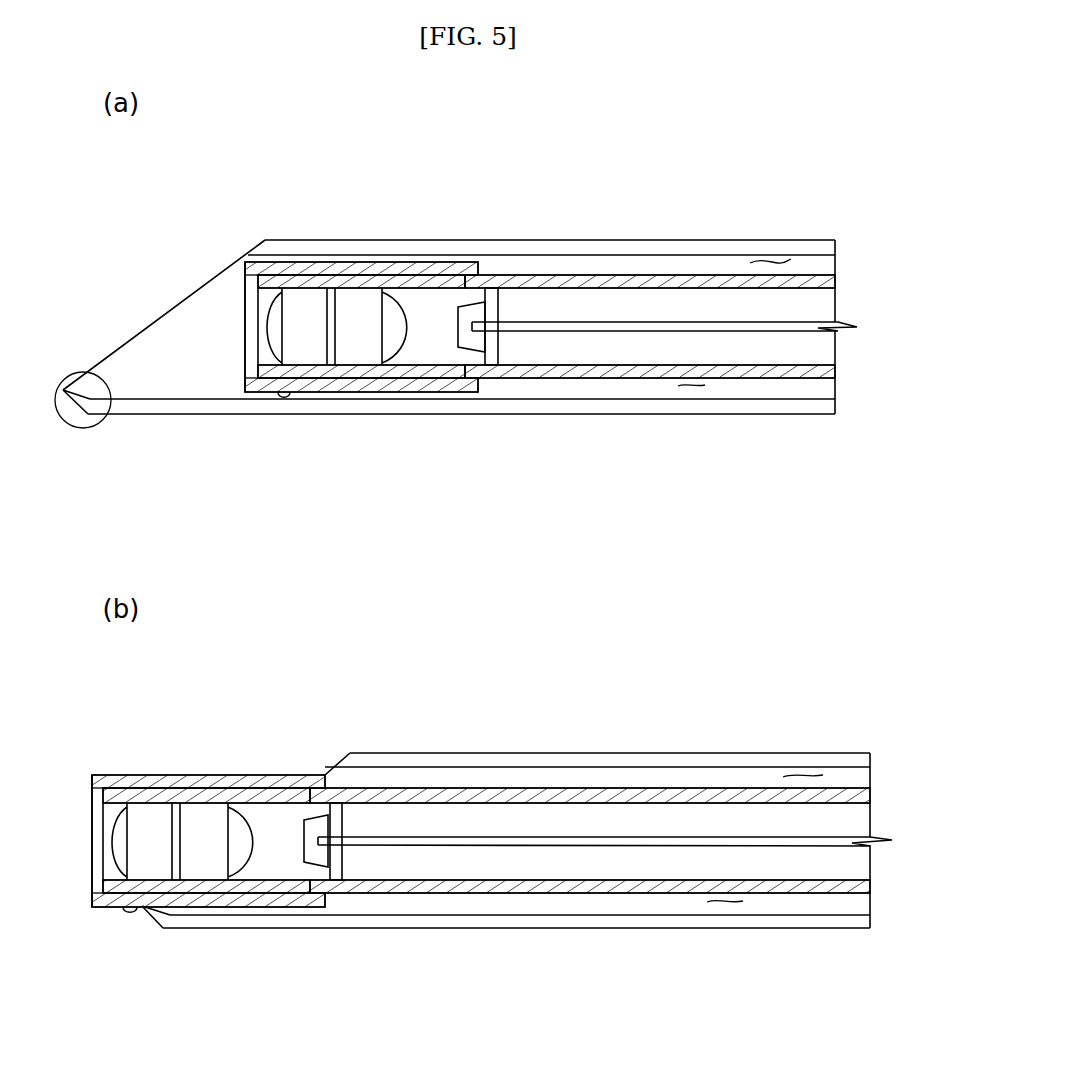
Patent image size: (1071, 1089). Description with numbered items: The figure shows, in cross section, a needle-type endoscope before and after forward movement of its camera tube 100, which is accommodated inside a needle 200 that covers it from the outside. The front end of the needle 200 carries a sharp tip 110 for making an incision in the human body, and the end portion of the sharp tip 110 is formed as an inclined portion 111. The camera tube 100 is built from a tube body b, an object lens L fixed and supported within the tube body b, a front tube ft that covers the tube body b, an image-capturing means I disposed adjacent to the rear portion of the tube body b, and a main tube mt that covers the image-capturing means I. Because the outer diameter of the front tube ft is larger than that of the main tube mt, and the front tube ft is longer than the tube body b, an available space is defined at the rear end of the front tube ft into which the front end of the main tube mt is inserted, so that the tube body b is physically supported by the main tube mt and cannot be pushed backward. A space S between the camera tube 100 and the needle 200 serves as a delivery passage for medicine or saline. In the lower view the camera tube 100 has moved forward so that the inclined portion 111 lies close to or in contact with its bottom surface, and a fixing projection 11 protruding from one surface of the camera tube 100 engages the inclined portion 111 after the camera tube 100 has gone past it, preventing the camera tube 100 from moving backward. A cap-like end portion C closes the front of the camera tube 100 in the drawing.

The camera tube 100 is at (607, 382).
The sharp tip 110 is at (167, 312).
The inclined portion 111 is at (84, 428).
The fixing projection 11 is at (283, 398).
The needle 200 is at (668, 250).
The front tube ft is at (333, 267).
The main tube mt is at (517, 282).
The object lens L is at (267, 349).
The tube body b is at (435, 375).
The cap C is at (248, 340).
The image-capturing means I is at (502, 347).
The space S is at (775, 263).